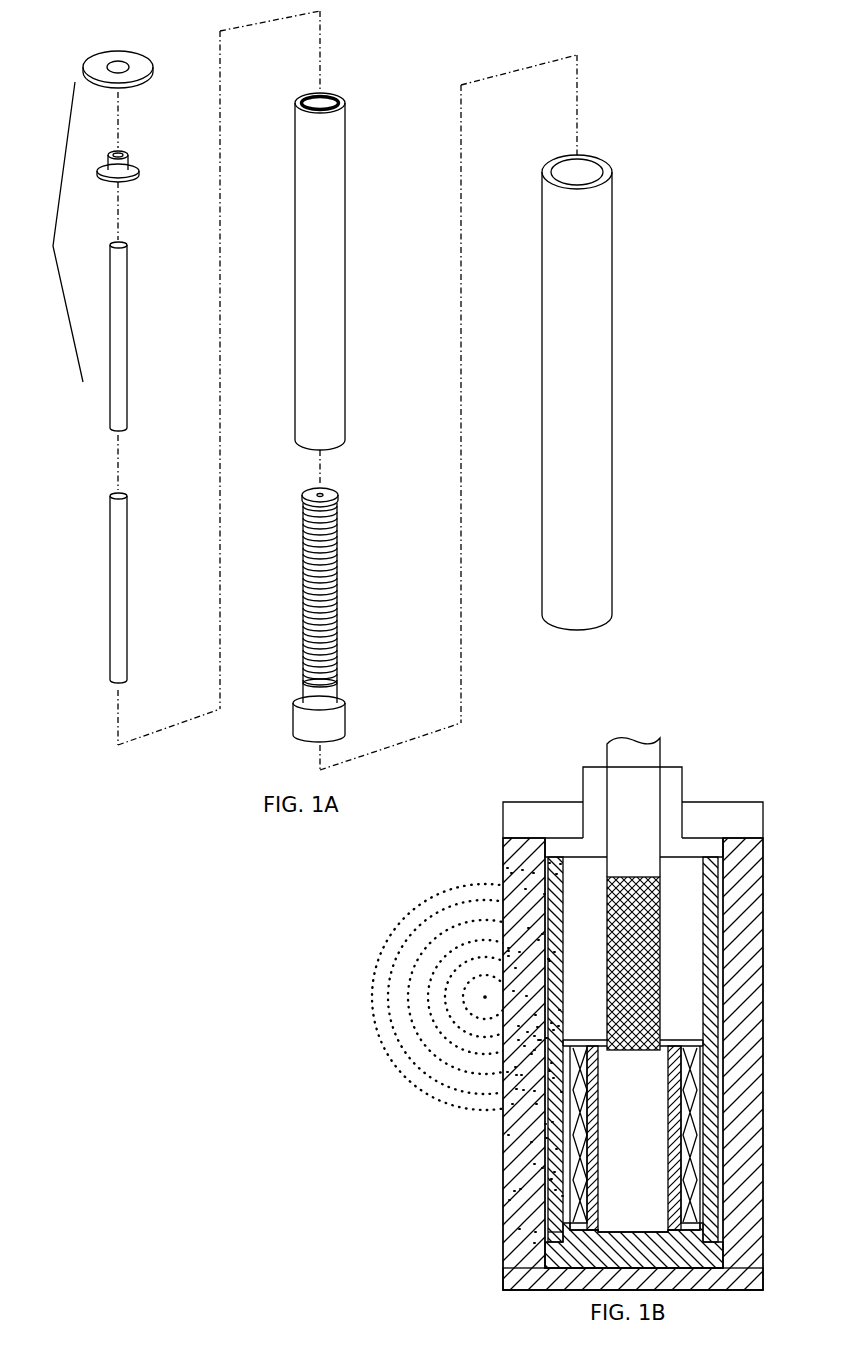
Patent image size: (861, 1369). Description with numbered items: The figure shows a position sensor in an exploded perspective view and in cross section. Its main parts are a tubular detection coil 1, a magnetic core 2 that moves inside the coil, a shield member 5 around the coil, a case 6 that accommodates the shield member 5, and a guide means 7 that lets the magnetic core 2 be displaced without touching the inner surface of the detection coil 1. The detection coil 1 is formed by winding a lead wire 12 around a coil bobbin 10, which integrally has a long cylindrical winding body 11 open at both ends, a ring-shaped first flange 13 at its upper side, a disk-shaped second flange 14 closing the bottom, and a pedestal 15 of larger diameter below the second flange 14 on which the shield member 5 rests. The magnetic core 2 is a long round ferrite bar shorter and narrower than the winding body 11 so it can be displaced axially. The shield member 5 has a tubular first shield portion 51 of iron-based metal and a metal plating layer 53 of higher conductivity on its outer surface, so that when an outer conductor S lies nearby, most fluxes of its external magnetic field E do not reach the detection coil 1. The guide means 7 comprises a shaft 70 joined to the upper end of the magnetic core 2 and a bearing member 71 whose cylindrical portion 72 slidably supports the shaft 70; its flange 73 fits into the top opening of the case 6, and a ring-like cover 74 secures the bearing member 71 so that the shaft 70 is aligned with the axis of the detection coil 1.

In FIG. 1A, the detection coil 1 is at (346, 615).
In FIG. 1B, the detection coil 1 is at (690, 1114).
In FIG. 1A, the magnetic core 2 is at (122, 570).
In FIG. 1B, the magnetic core 2 is at (660, 898).
In FIG. 1A, the shield member 5 is at (318, 313).
In FIG. 1B, the shield member 5 is at (712, 962).
In FIG. 1A, the case 6 is at (585, 340).
In FIG. 1B, the case 6 is at (743, 997).
In FIG. 1A, the guide means 7 is at (115, 228).
In FIG. 1A, the coil bobbin 10 is at (333, 695).
In FIG. 1B, the winding body 11 is at (675, 1158).
In FIG. 1A, the lead wire 12 is at (320, 627).
In FIG. 1B, the lead wire 12 is at (690, 1067).
In FIG. 1B, the first flange 13 is at (703, 1032).
In FIG. 1B, the second flange 14 is at (693, 1228).
In FIG. 1B, the pedestal 15 is at (707, 1257).
In FIG. 1B, the first shield portion 51 is at (557, 1230).
In FIG. 1B, the metal plating layer 53 is at (548, 1192).
In FIG. 1A, the shaft 70 is at (119, 328).
In FIG. 1B, the shaft 70 is at (645, 795).
In FIG. 1A, the bearing member 71 is at (142, 168).
In FIG. 1B, the bearing member 71 is at (624, 792).
In FIG. 1A, the cylindrical portion 72 is at (127, 165).
In FIG. 1B, the cylindrical portion 72 is at (595, 785).
In FIG. 1A, the flange 73 is at (130, 180).
In FIG. 1B, the flange 73 is at (550, 850).
In FIG. 1A, the cover 74 is at (138, 68).
In FIG. 1B, the cover 74 is at (552, 822).
In FIG. 1B, the external magnetic field E is at (460, 903).
In FIG. 1B, the outer conductor S is at (485, 997).